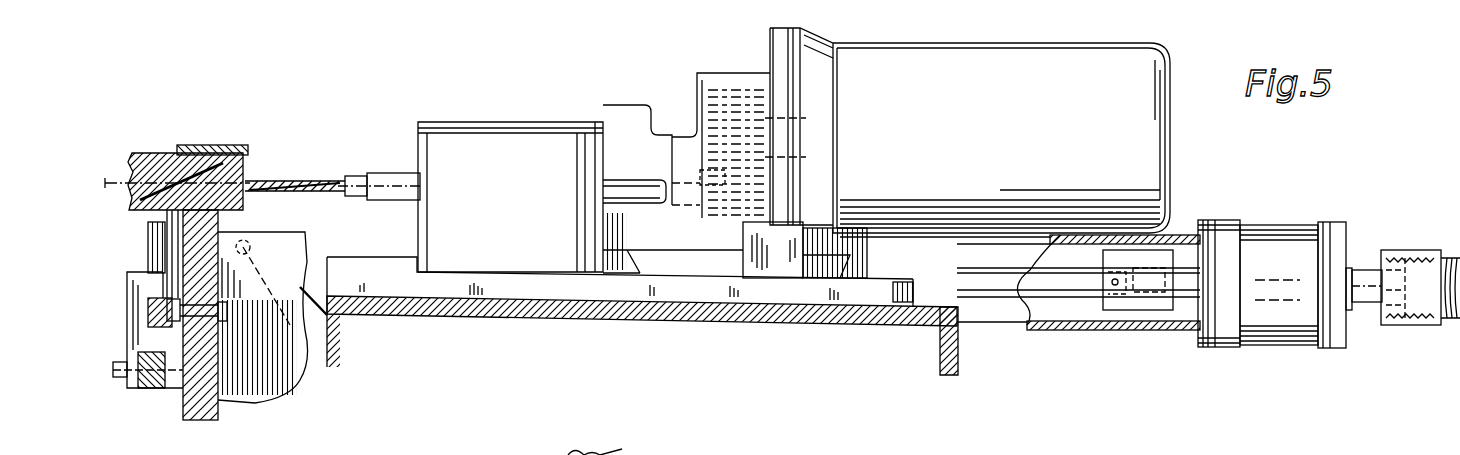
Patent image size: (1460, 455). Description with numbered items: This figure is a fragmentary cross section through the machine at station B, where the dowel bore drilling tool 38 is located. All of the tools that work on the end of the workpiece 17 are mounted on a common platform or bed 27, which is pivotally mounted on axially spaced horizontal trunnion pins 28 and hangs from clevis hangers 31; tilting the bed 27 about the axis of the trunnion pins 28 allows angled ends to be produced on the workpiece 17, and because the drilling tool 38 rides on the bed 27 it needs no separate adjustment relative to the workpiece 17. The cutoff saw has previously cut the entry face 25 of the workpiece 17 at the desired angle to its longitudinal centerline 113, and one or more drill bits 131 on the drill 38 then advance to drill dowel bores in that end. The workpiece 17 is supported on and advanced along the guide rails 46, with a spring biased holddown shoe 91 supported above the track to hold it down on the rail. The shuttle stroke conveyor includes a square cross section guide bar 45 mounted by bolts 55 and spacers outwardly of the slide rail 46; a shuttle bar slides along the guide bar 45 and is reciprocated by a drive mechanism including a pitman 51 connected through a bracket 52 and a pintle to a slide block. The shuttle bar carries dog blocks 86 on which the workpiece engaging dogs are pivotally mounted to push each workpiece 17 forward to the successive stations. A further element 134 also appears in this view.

The longitudinal centerline 113 is at (113, 175).
The workpiece 17 is at (165, 163).
The holddown shoe 91 is at (223, 145).
The entry face 25 is at (245, 168).
The drill bit 131 is at (333, 182).
The dowel bore drilling tool 38 is at (520, 138).
The trunnion pin 28 is at (248, 243).
The dog block 86 is at (150, 229).
The bracket 52 is at (133, 287).
The pitman 51 is at (152, 382).
The guide rail 46 is at (203, 403).
The guide bar 45 is at (173, 303).
The bolt 55 is at (182, 318).
The clevis hanger 31 is at (310, 319).
The bed 27 is at (457, 303).
The station B is at (650, 74).
The lead screw 134 is at (614, 449).